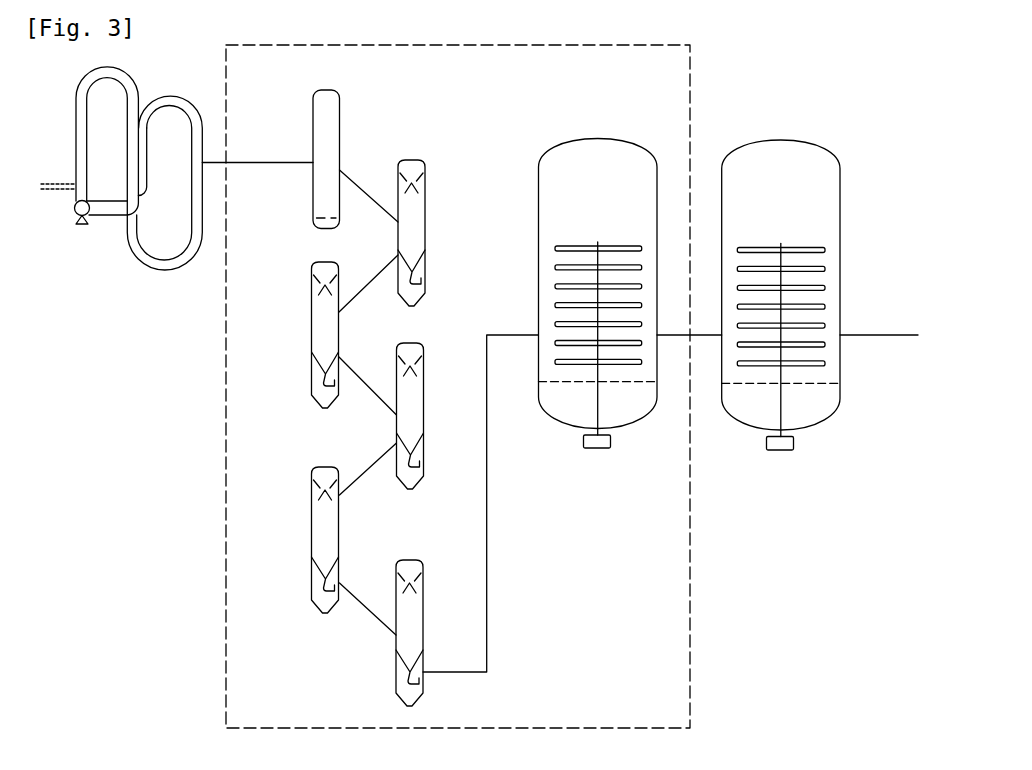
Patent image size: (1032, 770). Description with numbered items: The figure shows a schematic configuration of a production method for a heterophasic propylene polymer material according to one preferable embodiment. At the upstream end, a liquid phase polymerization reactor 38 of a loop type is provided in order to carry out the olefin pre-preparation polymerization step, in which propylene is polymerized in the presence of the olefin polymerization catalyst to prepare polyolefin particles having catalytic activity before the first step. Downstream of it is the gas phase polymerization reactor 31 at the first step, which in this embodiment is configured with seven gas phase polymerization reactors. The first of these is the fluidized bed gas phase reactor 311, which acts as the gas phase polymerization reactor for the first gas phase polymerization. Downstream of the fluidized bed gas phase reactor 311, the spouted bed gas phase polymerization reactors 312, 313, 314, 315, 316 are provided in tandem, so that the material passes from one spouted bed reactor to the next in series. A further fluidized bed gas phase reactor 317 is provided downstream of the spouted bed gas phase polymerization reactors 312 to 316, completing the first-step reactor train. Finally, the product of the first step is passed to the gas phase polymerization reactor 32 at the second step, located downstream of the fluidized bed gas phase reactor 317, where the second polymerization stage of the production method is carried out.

The gas phase polymerization reactor at the step (1) 31 is at (692, 600).
The fluidized bed gas phase reactor 311 is at (340, 115).
The spouted bed gas phase polymerization reactor 312 is at (425, 167).
The spouted bed gas phase polymerization reactor 313 is at (312, 337).
The spouted bed gas phase polymerization reactor 314 is at (424, 350).
The spouted bed gas phase polymerization reactor 315 is at (312, 522).
The spouted bed gas phase polymerization reactor 316 is at (412, 558).
The fluidized bed gas phase reactor 317 is at (598, 138).
The gas phase polymerization reactor at the step (2) 32 is at (778, 139).
The liquid phase polymerization reactor 38 is at (75, 214).